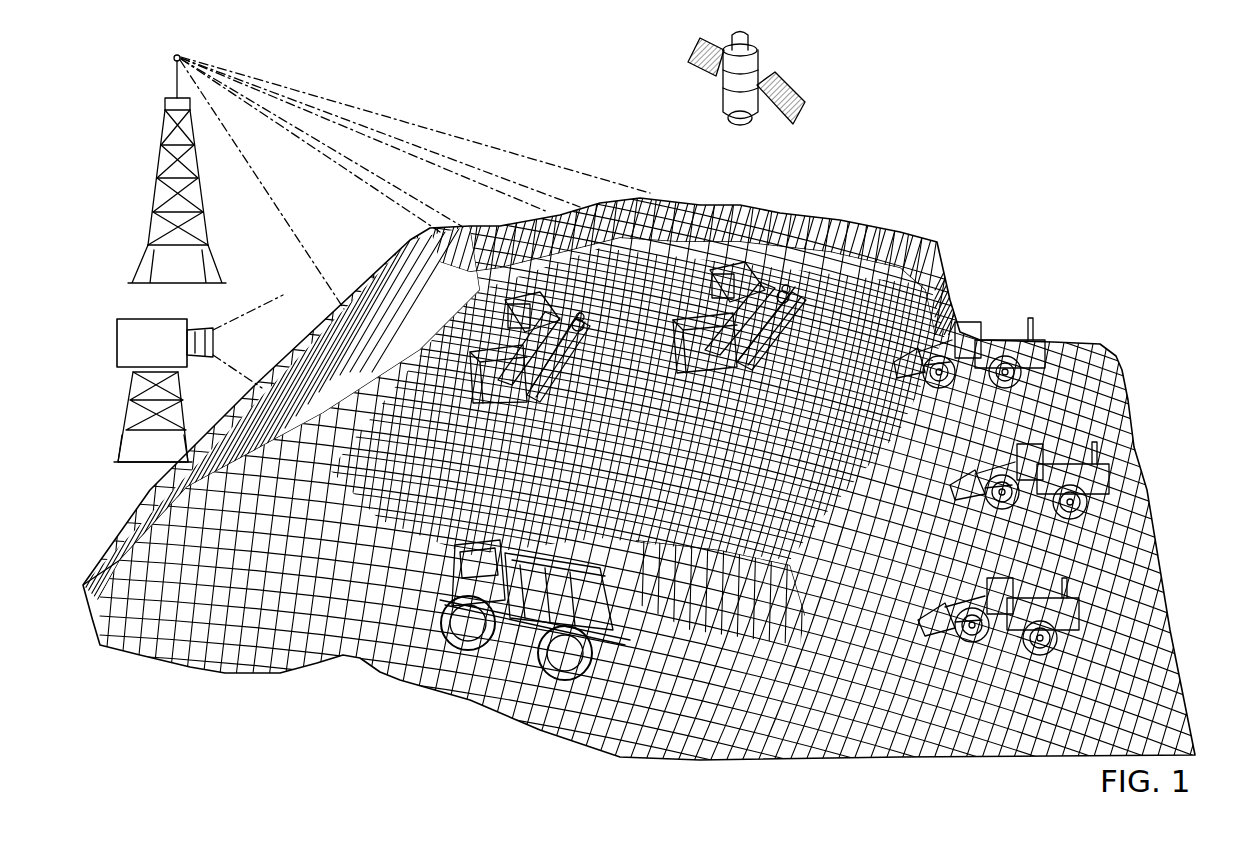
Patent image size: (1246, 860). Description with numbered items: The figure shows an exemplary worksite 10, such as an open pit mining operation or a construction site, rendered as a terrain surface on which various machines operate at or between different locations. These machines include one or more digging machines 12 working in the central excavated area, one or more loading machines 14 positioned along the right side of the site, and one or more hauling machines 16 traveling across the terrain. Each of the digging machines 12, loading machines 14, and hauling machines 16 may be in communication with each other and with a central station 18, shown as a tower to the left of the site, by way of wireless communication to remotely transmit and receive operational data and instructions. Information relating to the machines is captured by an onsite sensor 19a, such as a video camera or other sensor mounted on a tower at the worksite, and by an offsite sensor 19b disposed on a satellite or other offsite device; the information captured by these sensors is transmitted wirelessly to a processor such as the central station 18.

The worksite 10 is at (1058, 158).
The digging machine 12 is at (573, 387).
The loading machine 14 is at (1040, 350).
The hauling machine 16 is at (605, 640).
The central station 18 is at (208, 256).
The onsite sensor 19a is at (128, 320).
The offsite sensor 19b is at (760, 72).